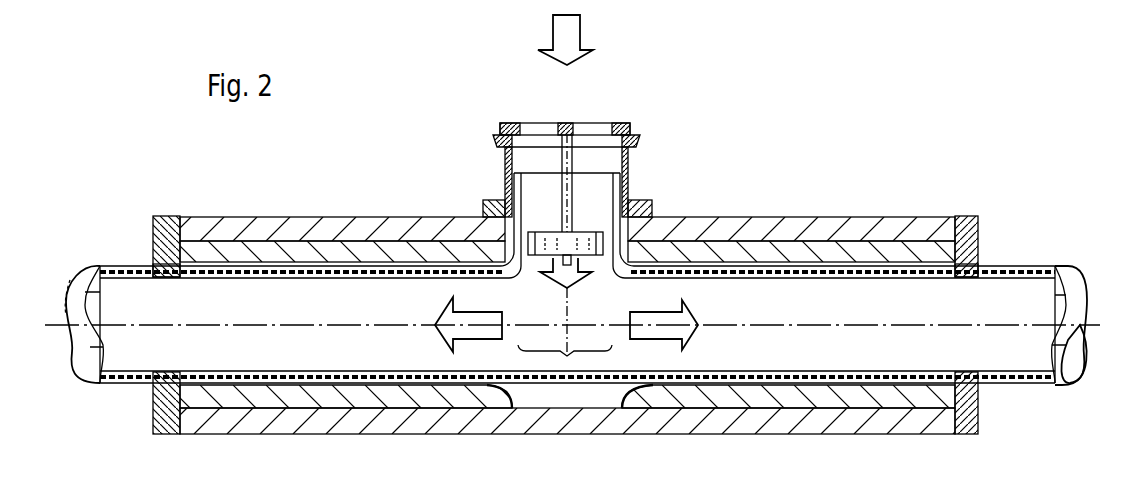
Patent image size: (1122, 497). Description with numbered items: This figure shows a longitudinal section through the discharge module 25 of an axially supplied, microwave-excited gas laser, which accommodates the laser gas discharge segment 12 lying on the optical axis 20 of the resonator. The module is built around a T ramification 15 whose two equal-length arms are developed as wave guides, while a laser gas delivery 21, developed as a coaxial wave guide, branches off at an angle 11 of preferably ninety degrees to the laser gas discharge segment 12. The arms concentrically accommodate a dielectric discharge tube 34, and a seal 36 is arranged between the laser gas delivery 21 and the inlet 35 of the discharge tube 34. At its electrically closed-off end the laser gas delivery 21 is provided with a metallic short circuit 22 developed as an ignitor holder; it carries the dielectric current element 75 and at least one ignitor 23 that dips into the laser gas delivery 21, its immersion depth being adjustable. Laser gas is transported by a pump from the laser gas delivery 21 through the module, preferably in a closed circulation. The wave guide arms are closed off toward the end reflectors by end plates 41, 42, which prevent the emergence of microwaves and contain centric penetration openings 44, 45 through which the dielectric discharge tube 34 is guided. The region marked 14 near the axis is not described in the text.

The angle 11 is at (565, 294).
The laser gas discharge segment 12 is at (766, 331).
The mixing zone 14 is at (567, 356).
The T ramification 15 is at (585, 302).
The optical axis 20 is at (147, 323).
The laser gas delivery 21 is at (640, 140).
The metallic short circuit 22 is at (570, 128).
The ignitor 23 is at (565, 155).
The discharge module 25 is at (349, 214).
The dielectric discharge tube 34 is at (738, 275).
The inlet 35 is at (628, 182).
The seal 36 is at (497, 202).
The end plate 41 is at (968, 218).
The end plate 42 is at (173, 217).
The centric penetration opening 44 is at (163, 268).
The centric penetration opening 45 is at (967, 270).
The dielectric current element 75 is at (548, 233).